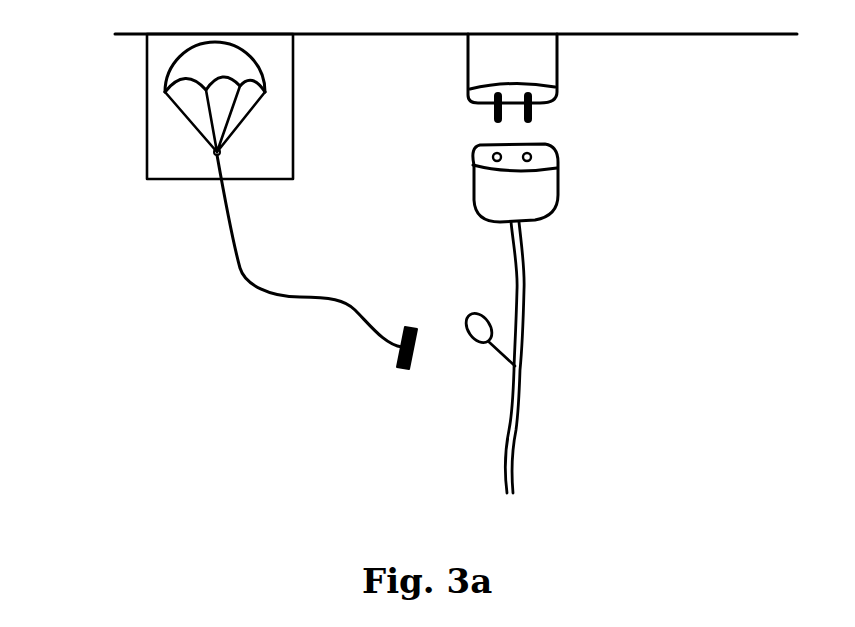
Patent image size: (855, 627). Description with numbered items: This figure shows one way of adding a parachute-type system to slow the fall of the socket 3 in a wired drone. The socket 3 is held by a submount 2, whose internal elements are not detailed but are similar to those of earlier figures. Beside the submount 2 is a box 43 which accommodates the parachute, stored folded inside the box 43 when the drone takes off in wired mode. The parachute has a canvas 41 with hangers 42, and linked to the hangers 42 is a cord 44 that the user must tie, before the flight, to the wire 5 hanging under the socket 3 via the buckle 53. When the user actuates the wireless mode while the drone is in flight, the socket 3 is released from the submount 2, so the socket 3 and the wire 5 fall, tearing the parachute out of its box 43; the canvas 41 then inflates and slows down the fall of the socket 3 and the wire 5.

The submount 2 is at (722, 63).
The socket 3 is at (616, 183).
The wire 5 is at (634, 357).
The buckle 53 is at (720, 330).
The canvas 41 is at (198, 62).
The hangers 42 is at (188, 121).
The box 43 is at (181, 181).
The cord 44 is at (238, 267).